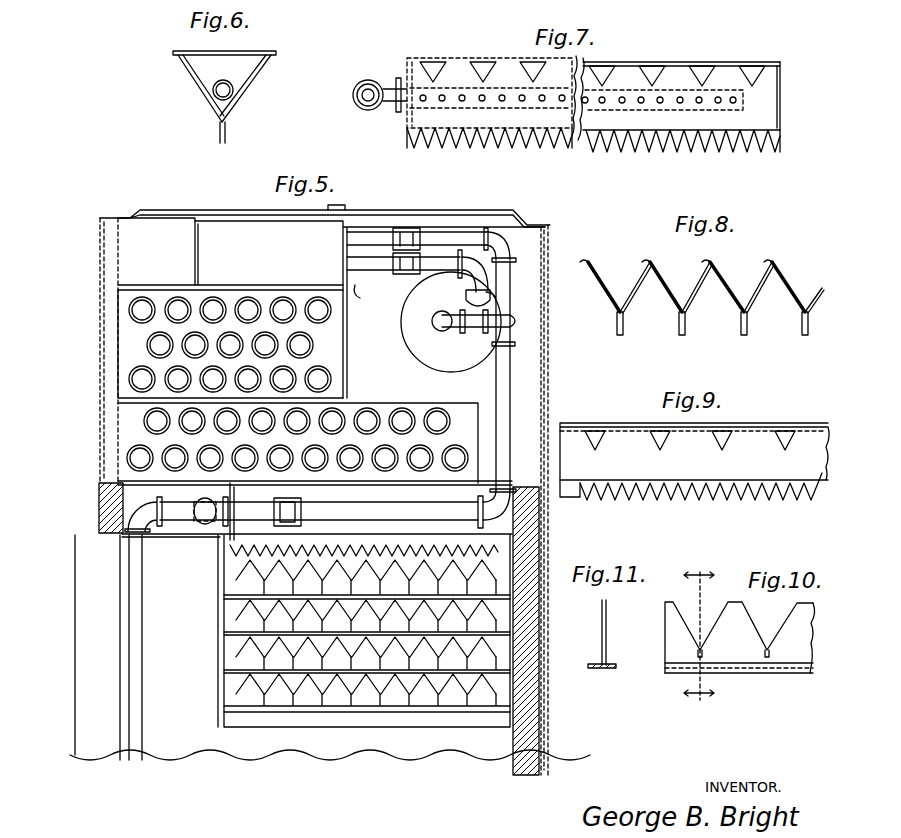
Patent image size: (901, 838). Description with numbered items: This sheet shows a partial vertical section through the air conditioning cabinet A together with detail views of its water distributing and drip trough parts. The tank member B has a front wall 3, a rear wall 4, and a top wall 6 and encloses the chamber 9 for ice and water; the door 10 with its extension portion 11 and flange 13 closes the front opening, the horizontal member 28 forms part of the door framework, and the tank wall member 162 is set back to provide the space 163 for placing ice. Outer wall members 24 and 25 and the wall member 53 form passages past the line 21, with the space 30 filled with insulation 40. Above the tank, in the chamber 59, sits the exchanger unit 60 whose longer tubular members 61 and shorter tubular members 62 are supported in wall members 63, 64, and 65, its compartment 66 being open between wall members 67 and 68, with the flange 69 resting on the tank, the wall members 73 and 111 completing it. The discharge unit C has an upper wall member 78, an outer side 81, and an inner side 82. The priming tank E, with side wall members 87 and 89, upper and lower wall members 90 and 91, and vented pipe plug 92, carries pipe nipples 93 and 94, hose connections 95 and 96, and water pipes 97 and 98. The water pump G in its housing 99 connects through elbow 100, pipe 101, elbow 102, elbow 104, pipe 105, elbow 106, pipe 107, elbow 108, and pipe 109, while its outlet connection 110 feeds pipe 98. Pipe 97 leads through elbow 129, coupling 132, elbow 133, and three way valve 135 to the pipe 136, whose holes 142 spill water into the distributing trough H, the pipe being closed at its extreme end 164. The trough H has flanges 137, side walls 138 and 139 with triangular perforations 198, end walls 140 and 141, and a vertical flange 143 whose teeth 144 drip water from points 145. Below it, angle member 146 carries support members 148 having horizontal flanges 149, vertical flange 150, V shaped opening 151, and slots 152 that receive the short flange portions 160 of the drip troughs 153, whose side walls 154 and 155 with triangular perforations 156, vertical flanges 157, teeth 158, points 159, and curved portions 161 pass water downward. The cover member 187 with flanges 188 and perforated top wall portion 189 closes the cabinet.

In FIG. 5, the front wall 3 is at (118, 712).
In FIG. 5, the rear wall 4 is at (538, 764).
In FIG. 5, the top wall 6 is at (172, 540).
In FIG. 5, the chamber 9 is at (445, 772).
In FIG. 5, the door 10 is at (75, 755).
In FIG. 5, the extension portion 11 is at (112, 530).
In FIG. 10, the extension portion 11 is at (699, 636).
In FIG. 5, the flange 13 is at (100, 515).
In FIG. 5, the line 21 is at (132, 480).
In FIG. 5, the outer wall member 24 is at (100, 500).
In FIG. 5, the outer wall member 25 is at (545, 388).
In FIG. 5, the horizontal member 28 is at (100, 528).
In FIG. 5, the space 30 is at (528, 556).
In FIG. 5, the insulating material 40 is at (528, 594).
In FIG. 5, the wall member 53 is at (120, 635).
In FIG. 5, the chamber 59 is at (535, 362).
In FIG. 5, the exchanger unit 60 is at (140, 287).
In FIG. 5, the tubular members 61 is at (128, 380).
In FIG. 5, the tubular members 62 is at (145, 418).
In FIG. 5, the wall member 63 is at (125, 352).
In FIG. 5, the wall member 64 is at (230, 296).
In FIG. 5, the wall member 65 is at (128, 432).
In FIG. 5, the compartment 66 is at (335, 362).
In FIG. 5, the wall member 67 is at (112, 327).
In FIG. 5, the wall member 68 is at (490, 400).
In FIG. 5, the flange 69 is at (520, 487).
In FIG. 5, the wall member 73 is at (346, 316).
In FIG. 5, the upper wall member 78 is at (140, 214).
In FIG. 5, the outer side 81 is at (120, 258).
In FIG. 5, the inner side 82 is at (365, 297).
In FIG. 5, the side wall member 87 is at (330, 232).
In FIG. 5, the side wall member 89 is at (198, 230).
In FIG. 5, the upper wall member 90 is at (255, 212).
In FIG. 5, the lower wall member 91 is at (332, 282).
In FIG. 5, the vented pipe plug 92 is at (331, 203).
In FIG. 5, the pipe nipple 93 is at (380, 230).
In FIG. 5, the pipe nipple 94 is at (380, 274).
In FIG. 5, the water hose connection 95 is at (412, 228).
In FIG. 5, the water hose connection 96 is at (408, 272).
In FIG. 5, the water pipe 97 is at (460, 228).
In FIG. 5, the water pipe 98 is at (460, 264).
In FIG. 5, the housing 99 is at (402, 325).
In FIG. 5, the elbow 100 is at (438, 330).
In FIG. 5, the pipe 101 is at (472, 340).
In FIG. 5, the elbow 102 is at (500, 312).
In FIG. 5, the elbow 104 is at (512, 330).
In FIG. 5, the pipe 105 is at (512, 412).
In FIG. 5, the elbow 106 is at (488, 524).
In FIG. 5, the pipe 107 is at (362, 516).
In FIG. 5, the elbow 108 is at (100, 486).
In FIG. 5, the pipe 109 is at (142, 630).
In FIG. 5, the outlet connection 110 is at (500, 270).
In FIG. 5, the wall member 111 is at (402, 404).
In FIG. 5, the elbow 129 is at (510, 240).
In FIG. 5, the coupling 132 is at (300, 502).
In FIG. 5, the elbow 133 is at (207, 502).
In FIG. 7, the three way valve 135 is at (355, 105).
In FIG. 6, the pipe 136 is at (212, 90).
In FIG. 7, the pipe 136 is at (392, 78).
In FIG. 6, the flanges 137 is at (178, 55).
In FIG. 7, the flanges 137 is at (710, 42).
In FIG. 6, the side wall 138 is at (250, 82).
In FIG. 7, the side wall 138 is at (770, 112).
In FIG. 6, the side wall 139 is at (198, 72).
In FIG. 6, the end wall 140 is at (245, 62).
In FIG. 7, the end wall 140 is at (782, 98).
In FIG. 5, the end wall 140 is at (490, 500).
In FIG. 7, the end wall 141 is at (408, 118).
In FIG. 5, the end wall 141 is at (238, 500).
In FIG. 7, the holes 142 is at (482, 102).
In FIG. 6, the vertical flange 143 is at (228, 133).
In FIG. 7, the vertical flange 143 is at (407, 140).
In FIG. 5, the vertical flange 143 is at (528, 540).
In FIG. 7, the teeth 144 is at (495, 140).
In FIG. 7, the points 145 is at (593, 152).
In FIG. 5, the angle member 146 is at (322, 728).
In FIG. 10, the support members 148 is at (815, 665).
In FIG. 11, the support members 148 is at (607, 652).
In FIG. 11, the horizontal flanges 149 is at (602, 670).
In FIG. 10, the vertical flange 150 is at (672, 625).
In FIG. 10, the V shaped opening 151 is at (815, 608).
In FIG. 11, the V shaped opening 151 is at (601, 626).
In FIG. 10, the slots 152 is at (703, 651).
In FIG. 11, the slots 152 is at (601, 648).
In FIG. 5, the drip troughs 153 is at (367, 636).
In FIG. 8, the drip troughs 153 is at (616, 312).
In FIG. 9, the drip troughs 153 is at (828, 445).
In FIG. 8, the side wall 154 is at (735, 289).
In FIG. 9, the side wall 154 is at (750, 450).
In FIG. 8, the side wall 155 is at (604, 290).
In FIG. 9, the triangular perforations 156 is at (598, 444).
In FIG. 8, the vertical flanges 157 is at (620, 336).
In FIG. 9, the vertical flanges 157 is at (588, 498).
In FIG. 9, the teeth 158 is at (646, 500).
In FIG. 9, the points 159 is at (690, 500).
In FIG. 5, the short portion of vertical flange 160 is at (556, 480).
In FIG. 8, the curved portions 161 is at (784, 250).
In FIG. 9, the curved portions 161 is at (625, 425).
In FIG. 5, the wall member 162 is at (220, 660).
In FIG. 5, the space 163 is at (160, 588).
In FIG. 7, the extreme end 164 is at (755, 104).
In FIG. 5, the cover member 187 is at (518, 212).
In FIG. 5, the flanges 188 is at (100, 218).
In FIG. 5, the top wall portion 189 is at (212, 208).
In FIG. 7, the triangular perforations 198 is at (440, 70).
In FIG. 5, the cabinet A is at (100, 258).
In FIG. 5, the tank member B is at (530, 744).
In FIG. 5, the discharge unit C is at (102, 240).
In FIG. 5, the priming tank E is at (350, 212).
In FIG. 5, the water pump G is at (420, 366).
In FIG. 6, the distributing trough H is at (262, 70).
In FIG. 7, the distributing trough H is at (782, 78).
In FIG. 5, the distributing trough H is at (232, 486).